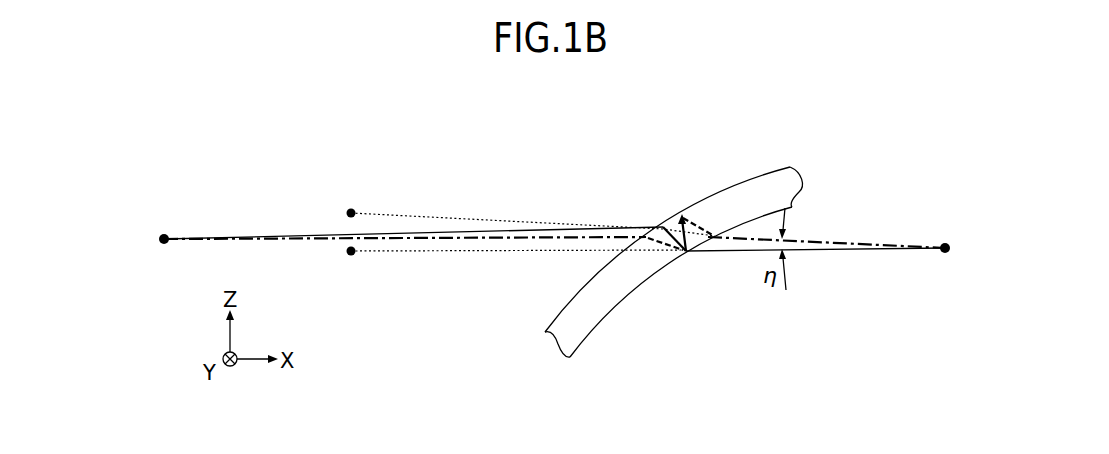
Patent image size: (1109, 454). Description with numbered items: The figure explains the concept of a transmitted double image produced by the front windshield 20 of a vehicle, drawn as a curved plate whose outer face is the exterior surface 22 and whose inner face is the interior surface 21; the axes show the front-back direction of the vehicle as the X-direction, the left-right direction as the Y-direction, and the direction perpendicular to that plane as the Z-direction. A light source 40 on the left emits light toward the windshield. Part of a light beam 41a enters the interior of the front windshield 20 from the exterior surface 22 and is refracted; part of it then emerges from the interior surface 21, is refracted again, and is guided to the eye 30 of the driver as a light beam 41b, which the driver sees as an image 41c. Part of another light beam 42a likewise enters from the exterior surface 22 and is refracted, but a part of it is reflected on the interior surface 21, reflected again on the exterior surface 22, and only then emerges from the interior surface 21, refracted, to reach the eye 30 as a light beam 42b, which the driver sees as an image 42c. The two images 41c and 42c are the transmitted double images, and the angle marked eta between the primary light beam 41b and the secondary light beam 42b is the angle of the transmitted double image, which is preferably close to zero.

The front windshield 20 is at (704, 243).
The interior surface 21 is at (802, 205).
The exterior surface 22 is at (735, 183).
The eye of the driver 30 is at (944, 246).
The light source 40 is at (166, 235).
The light beam 41a is at (328, 232).
The light beam (primary beam) 41b is at (811, 252).
The image 41c is at (353, 255).
The light beam 42a is at (310, 247).
The light beam (secondary beam) 42b is at (820, 238).
The image 42c is at (352, 211).